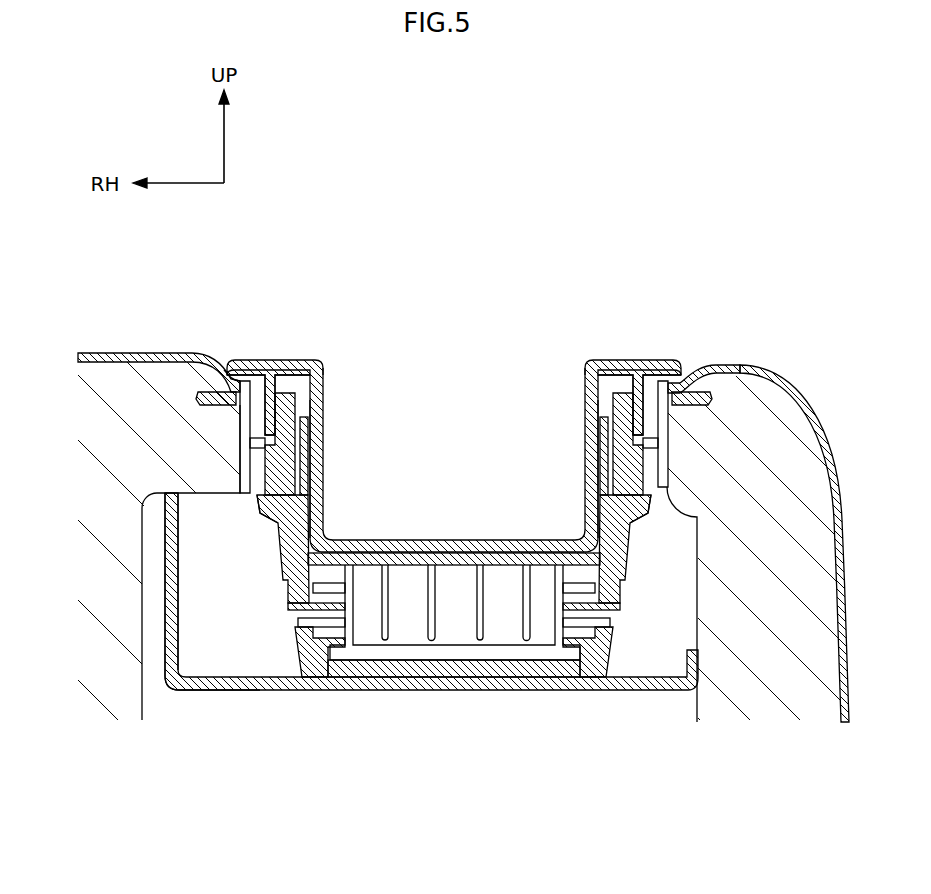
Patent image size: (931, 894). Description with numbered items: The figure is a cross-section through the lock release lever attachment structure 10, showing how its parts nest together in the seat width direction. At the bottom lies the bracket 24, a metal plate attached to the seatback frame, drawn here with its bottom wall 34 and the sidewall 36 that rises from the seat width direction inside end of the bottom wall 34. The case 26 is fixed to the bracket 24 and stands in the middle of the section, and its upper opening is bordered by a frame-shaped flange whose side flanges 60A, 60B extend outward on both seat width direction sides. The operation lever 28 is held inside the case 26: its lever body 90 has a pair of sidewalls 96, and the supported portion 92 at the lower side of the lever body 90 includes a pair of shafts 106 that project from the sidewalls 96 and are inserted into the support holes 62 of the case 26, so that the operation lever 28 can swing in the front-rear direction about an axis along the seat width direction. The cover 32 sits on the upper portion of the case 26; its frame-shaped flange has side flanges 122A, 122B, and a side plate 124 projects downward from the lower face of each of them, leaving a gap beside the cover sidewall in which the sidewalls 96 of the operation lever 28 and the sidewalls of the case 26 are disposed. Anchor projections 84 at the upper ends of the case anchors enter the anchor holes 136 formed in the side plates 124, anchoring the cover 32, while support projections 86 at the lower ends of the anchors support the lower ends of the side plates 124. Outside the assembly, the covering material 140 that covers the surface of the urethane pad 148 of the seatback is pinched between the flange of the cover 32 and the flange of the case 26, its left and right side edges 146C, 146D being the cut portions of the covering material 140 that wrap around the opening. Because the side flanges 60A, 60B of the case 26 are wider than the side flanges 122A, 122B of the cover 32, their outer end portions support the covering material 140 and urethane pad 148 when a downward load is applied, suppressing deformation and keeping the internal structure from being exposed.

The lock release lever attachment structure 10 is at (480, 340).
The bracket 24 is at (252, 697).
The case 26 is at (278, 568).
The operation lever 28 is at (512, 556).
The cover 32 is at (425, 532).
The bottom wall 34 is at (550, 692).
The sidewall 36 is at (163, 625).
The side flange 60A is at (710, 368).
The side flange 60B is at (195, 357).
The support hole 62 is at (296, 607).
The anchor projection 84 is at (263, 508).
The support projection 86 is at (250, 460).
The lever body 90 is at (470, 556).
The supported portion 92 is at (386, 648).
The sidewall 96 is at (324, 483).
The shaft 106 is at (298, 623).
The side flange 122A is at (623, 360).
The side flange 122B is at (257, 360).
The side plate 124 is at (326, 380).
The anchor hole 136 is at (309, 445).
The covering material 140 is at (110, 352).
The left side edge 146C is at (630, 392).
The right side edge 146D is at (283, 392).
The urethane pad 148 is at (116, 518).